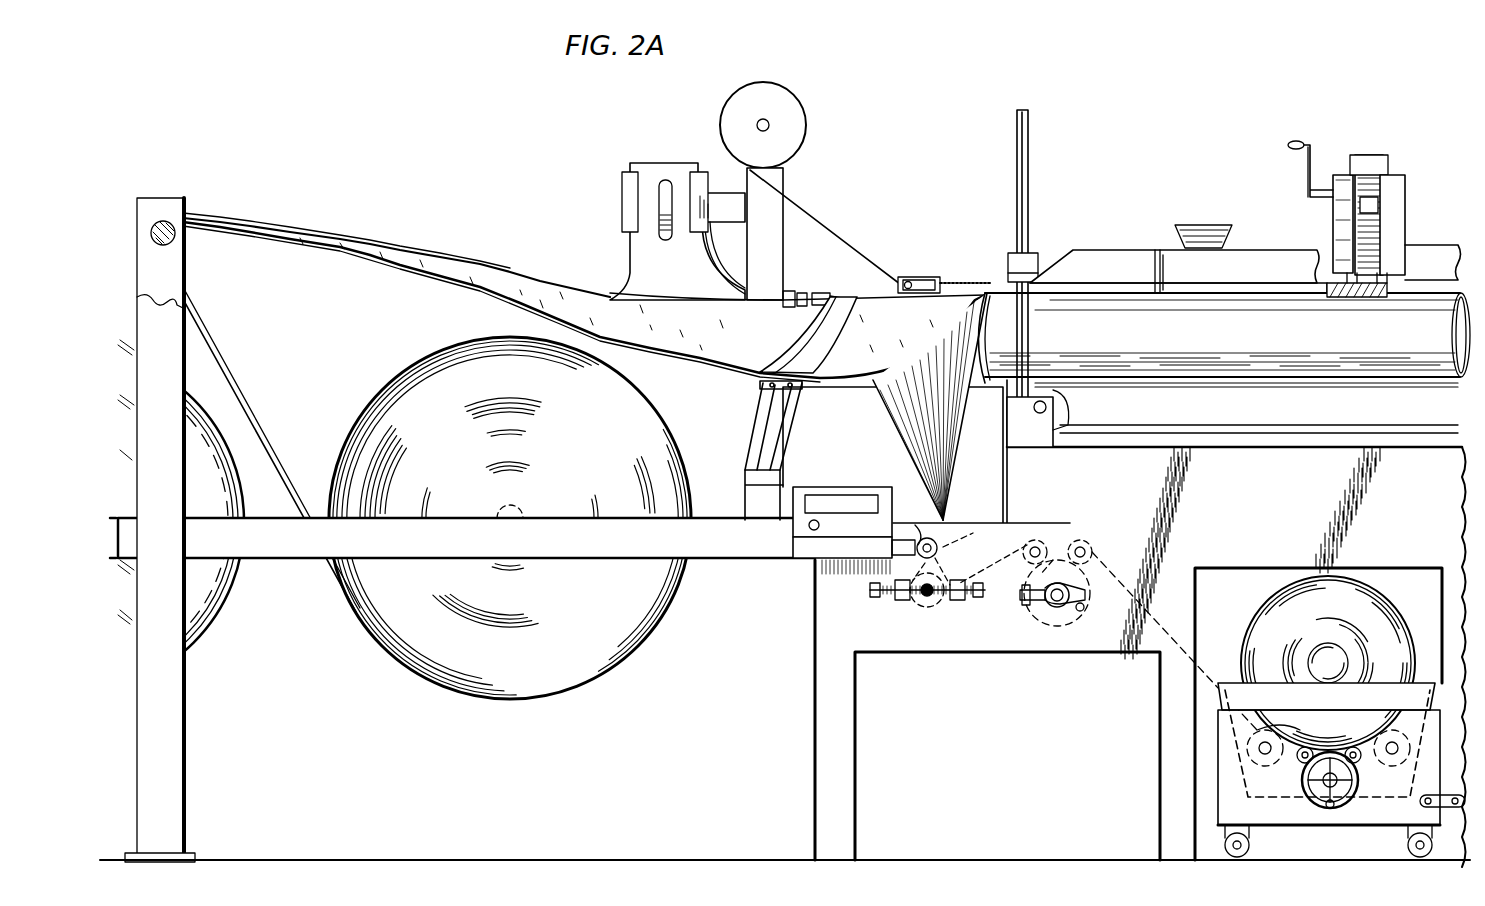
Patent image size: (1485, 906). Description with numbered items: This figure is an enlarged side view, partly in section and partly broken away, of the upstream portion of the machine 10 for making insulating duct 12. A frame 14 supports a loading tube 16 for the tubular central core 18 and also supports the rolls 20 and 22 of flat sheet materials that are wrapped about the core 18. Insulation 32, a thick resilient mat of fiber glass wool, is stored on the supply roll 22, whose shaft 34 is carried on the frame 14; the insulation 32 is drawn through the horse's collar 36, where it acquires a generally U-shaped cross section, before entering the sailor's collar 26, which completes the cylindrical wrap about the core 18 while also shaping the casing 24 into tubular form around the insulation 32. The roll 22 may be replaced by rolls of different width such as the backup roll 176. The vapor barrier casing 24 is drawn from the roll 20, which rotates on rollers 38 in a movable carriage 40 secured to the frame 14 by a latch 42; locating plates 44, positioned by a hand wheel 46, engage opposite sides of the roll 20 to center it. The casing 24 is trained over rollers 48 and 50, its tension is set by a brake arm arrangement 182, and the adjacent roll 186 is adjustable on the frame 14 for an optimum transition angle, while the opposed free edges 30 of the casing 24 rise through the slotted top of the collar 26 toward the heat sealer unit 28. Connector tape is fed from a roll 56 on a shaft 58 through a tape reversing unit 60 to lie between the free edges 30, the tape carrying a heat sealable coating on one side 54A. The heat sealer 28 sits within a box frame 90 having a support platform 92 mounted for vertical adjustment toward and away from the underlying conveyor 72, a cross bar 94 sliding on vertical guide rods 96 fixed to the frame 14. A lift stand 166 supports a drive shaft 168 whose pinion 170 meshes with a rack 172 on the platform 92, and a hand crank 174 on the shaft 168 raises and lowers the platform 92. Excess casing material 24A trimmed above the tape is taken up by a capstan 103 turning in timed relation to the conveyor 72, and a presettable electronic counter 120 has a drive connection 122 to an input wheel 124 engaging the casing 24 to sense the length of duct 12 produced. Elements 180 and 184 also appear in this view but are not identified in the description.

The machine 10 is at (1189, 110).
The insulating duct 12 is at (1269, 339).
The frame 14 is at (830, 686).
The loading tube 16 is at (630, 250).
The tubular central core 18 is at (815, 292).
The roll 20 is at (1268, 592).
The supply roll 22 is at (507, 700).
The vapor barrier casing 24 is at (893, 415).
The excess casing material 24A is at (1232, 244).
The sailor's collar 26 is at (1005, 340).
The heat sealer unit 28 is at (1159, 244).
The free edges 30 is at (992, 290).
The insulation 32 is at (525, 270).
The shaft 34 is at (517, 508).
The horse's collar 36 is at (832, 345).
The rollers 38 is at (1290, 745).
The movable carriage 40 is at (1275, 815).
The latch 42 is at (1450, 807).
The locating plates 44 is at (1225, 692).
The hand wheel 46 is at (1335, 808).
The roller 48 is at (1082, 540).
The roller 50 is at (902, 604).
The heat sealable coated side of tape 54A is at (812, 216).
The tape roll 56 is at (792, 101).
The shaft 58 is at (760, 119).
The tape reversing unit 60 is at (916, 270).
The underlying conveyor 72 is at (1252, 384).
The box frame 90 is at (1254, 279).
The support platform 92 is at (1345, 294).
The cross bar 94 is at (1038, 262).
The vertical guide rods 96 is at (1030, 137).
The capstan 103 is at (1203, 222).
The electronic counter 120 is at (860, 472).
The drive connection 122 is at (915, 525).
The input wheel 124 is at (945, 550).
The lift stand 166 is at (1397, 178).
The drive shaft 168 is at (1338, 175).
The pinion 170 is at (1395, 215).
The rack 172 is at (1372, 155).
The hand crank 174 is at (1304, 166).
The backup roll 176 is at (205, 626).
The adjuster 180 is at (974, 604).
The adjustable brake arm arrangement 182 is at (1025, 610).
The pulley 184 is at (1046, 535).
The adjacent roll 186 is at (932, 588).